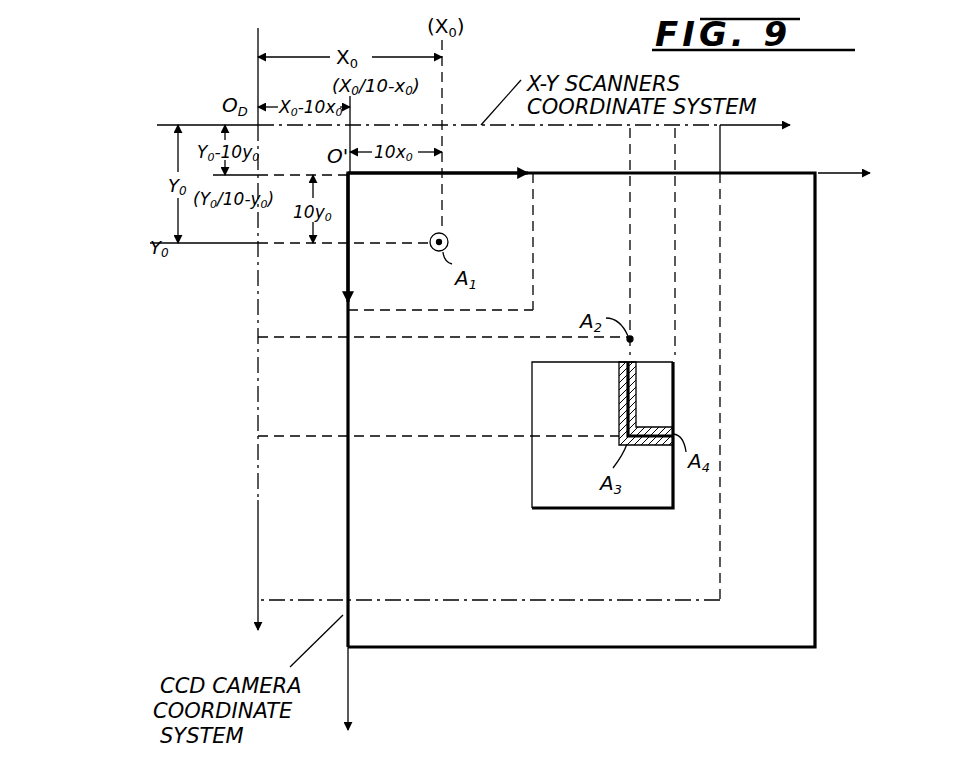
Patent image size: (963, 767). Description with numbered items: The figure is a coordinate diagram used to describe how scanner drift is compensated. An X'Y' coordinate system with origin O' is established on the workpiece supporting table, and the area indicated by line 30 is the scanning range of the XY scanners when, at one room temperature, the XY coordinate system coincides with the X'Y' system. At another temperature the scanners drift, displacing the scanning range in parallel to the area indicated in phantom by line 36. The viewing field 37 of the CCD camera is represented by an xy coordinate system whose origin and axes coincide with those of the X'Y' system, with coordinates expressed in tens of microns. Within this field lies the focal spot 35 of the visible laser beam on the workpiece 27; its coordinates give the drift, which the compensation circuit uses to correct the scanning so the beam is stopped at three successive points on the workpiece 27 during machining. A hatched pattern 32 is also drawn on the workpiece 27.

The workpiece 27 is at (532, 467).
The line indicating scanning range area 30 is at (817, 258).
The L-shaped alignment pattern 32 is at (636, 396).
The focal spot 35 is at (448, 237).
The line indicating drifted scanning range 36 is at (723, 163).
The viewing field 37 is at (540, 247).